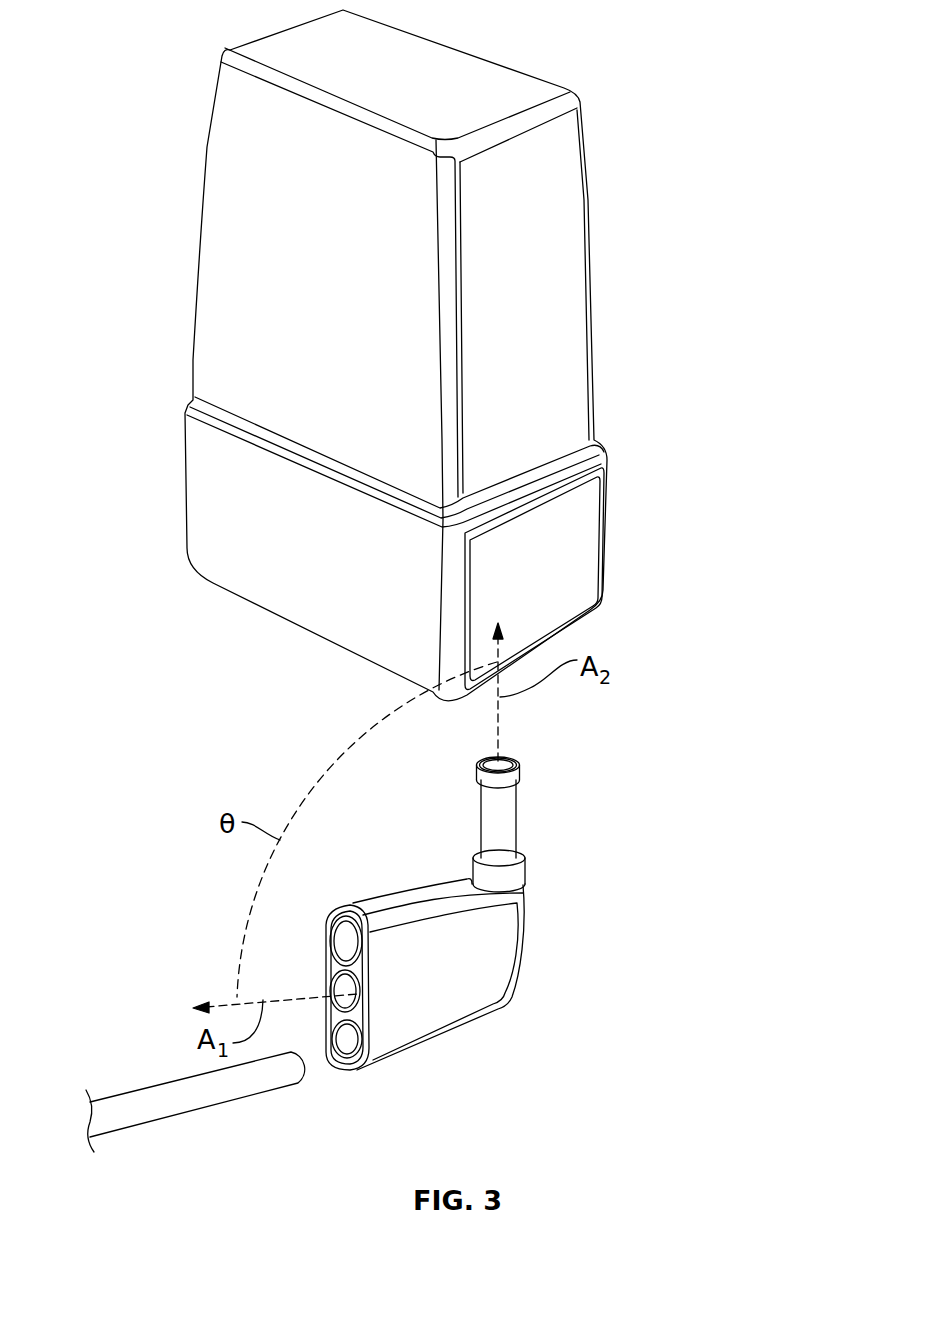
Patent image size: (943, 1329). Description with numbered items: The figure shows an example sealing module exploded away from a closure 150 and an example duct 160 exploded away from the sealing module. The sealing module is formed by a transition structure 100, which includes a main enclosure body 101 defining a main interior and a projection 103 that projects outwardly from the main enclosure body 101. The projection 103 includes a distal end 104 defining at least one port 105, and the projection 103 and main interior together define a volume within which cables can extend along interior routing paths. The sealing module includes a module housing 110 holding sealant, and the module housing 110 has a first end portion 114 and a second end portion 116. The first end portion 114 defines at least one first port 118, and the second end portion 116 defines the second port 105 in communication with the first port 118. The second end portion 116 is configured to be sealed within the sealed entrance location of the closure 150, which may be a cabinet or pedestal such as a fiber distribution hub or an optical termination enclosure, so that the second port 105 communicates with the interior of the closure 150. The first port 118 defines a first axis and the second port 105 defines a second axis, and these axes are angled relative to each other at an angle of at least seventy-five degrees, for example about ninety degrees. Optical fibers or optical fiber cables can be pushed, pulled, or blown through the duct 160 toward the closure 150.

The transition structure 100 is at (436, 912).
The main enclosure body 101 is at (440, 900).
The projection 103 is at (518, 840).
The distal end 104 is at (520, 762).
The port 105 is at (500, 763).
The module housing 110 is at (438, 1043).
The first end portion 114 is at (324, 912).
The second end portion 116 is at (475, 762).
The first port 118 is at (345, 942).
The closure 150 is at (592, 338).
The duct 160 is at (143, 1089).